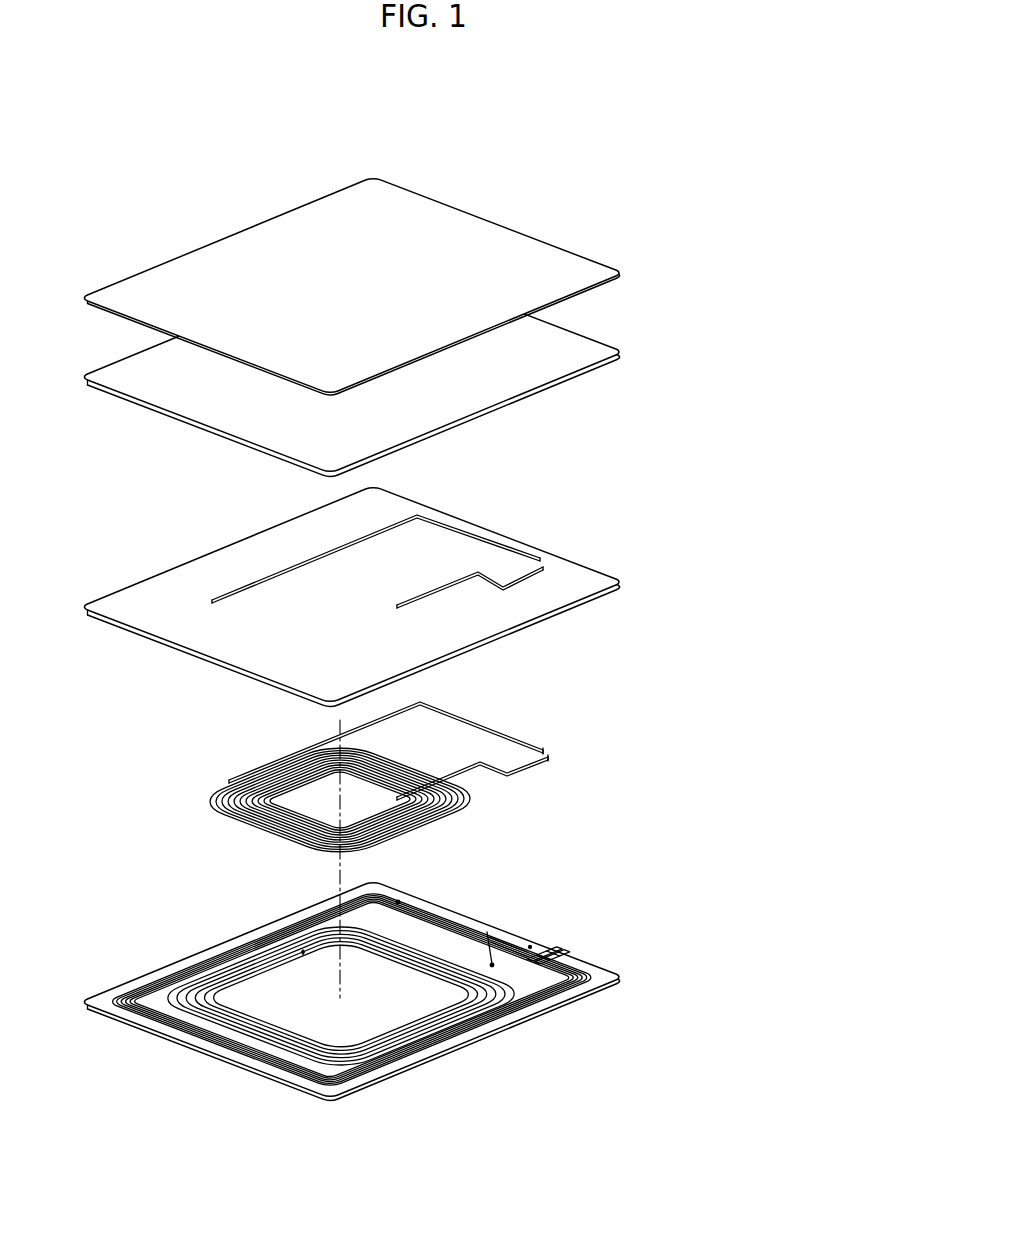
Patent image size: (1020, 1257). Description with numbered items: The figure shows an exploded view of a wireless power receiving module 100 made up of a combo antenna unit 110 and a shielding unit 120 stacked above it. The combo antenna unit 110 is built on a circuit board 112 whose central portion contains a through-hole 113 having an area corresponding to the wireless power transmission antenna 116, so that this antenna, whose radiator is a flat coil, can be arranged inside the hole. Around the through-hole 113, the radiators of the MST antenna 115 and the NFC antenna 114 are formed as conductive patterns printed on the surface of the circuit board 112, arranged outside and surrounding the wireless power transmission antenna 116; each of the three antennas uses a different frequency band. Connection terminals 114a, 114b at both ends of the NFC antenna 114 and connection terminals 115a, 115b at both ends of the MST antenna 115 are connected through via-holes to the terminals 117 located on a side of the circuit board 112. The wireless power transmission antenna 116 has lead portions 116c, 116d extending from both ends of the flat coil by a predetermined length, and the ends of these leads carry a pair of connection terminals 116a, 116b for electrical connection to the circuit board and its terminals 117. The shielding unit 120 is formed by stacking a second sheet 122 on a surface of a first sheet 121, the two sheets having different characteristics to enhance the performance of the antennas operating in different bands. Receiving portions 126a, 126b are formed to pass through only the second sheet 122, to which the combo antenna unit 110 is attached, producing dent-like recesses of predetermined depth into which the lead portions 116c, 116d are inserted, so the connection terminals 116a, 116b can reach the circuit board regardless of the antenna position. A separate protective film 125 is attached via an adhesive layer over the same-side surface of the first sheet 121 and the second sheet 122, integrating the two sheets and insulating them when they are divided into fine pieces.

The wireless power receiving module 100 is at (370, 135).
The combo antenna unit 110 is at (435, 886).
The circuit board 112 is at (390, 962).
The through-hole 113 is at (393, 1000).
The NFC antenna 114 is at (378, 963).
The connection terminal 114a is at (398, 902).
The connection terminal 114b is at (530, 947).
The MST antenna 115 is at (365, 946).
The connection terminal 115a is at (303, 957).
The connection terminal 115b is at (492, 964).
The wireless power transmission antenna 116 is at (416, 759).
The connection terminal 116a is at (543, 752).
The connection terminal 116b is at (594, 765).
The lead portion 116c is at (447, 718).
The lead portion 116d is at (488, 760).
The terminals 117 is at (573, 942).
The shielding unit 120 is at (427, 482).
The first sheet 121 is at (567, 363).
The second sheet 122 is at (395, 580).
The protective film 125 is at (528, 250).
The receiving portion 126a is at (450, 527).
The receiving portion 126b is at (532, 580).